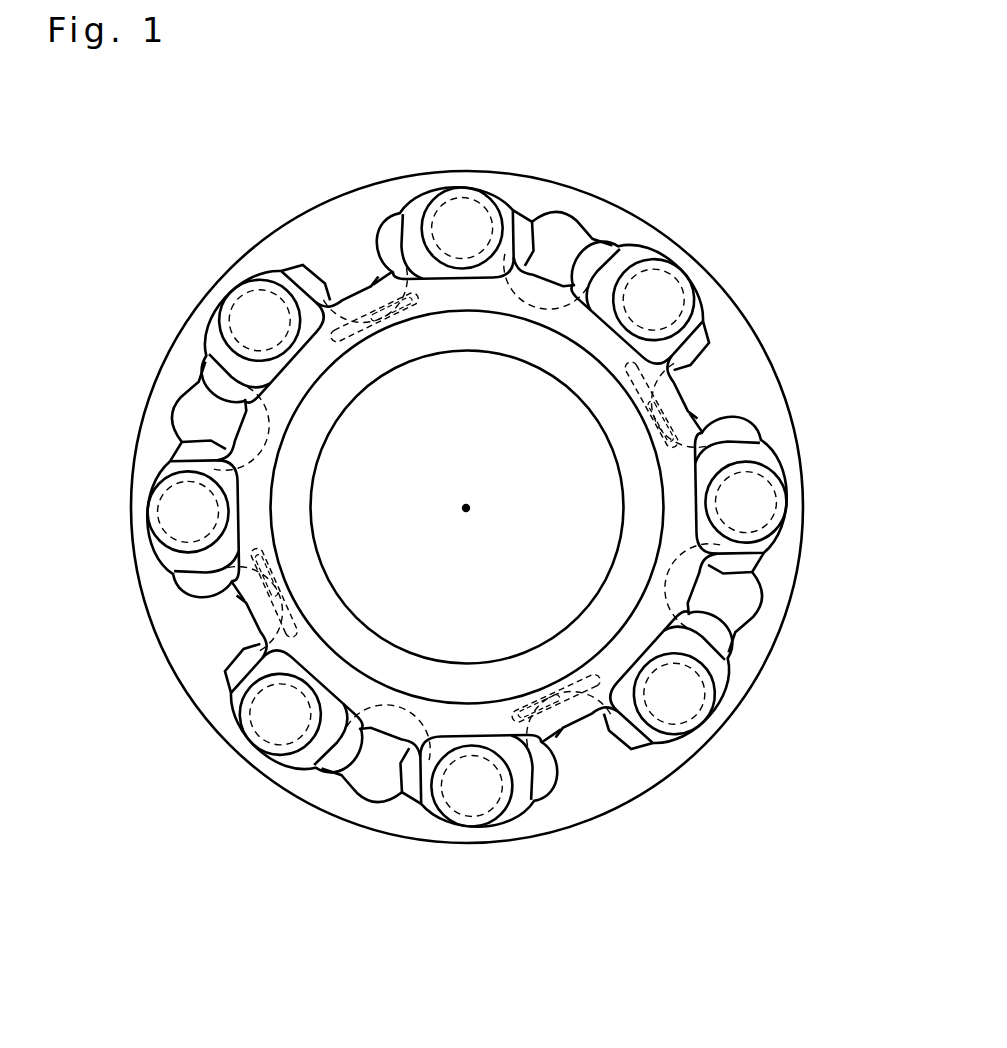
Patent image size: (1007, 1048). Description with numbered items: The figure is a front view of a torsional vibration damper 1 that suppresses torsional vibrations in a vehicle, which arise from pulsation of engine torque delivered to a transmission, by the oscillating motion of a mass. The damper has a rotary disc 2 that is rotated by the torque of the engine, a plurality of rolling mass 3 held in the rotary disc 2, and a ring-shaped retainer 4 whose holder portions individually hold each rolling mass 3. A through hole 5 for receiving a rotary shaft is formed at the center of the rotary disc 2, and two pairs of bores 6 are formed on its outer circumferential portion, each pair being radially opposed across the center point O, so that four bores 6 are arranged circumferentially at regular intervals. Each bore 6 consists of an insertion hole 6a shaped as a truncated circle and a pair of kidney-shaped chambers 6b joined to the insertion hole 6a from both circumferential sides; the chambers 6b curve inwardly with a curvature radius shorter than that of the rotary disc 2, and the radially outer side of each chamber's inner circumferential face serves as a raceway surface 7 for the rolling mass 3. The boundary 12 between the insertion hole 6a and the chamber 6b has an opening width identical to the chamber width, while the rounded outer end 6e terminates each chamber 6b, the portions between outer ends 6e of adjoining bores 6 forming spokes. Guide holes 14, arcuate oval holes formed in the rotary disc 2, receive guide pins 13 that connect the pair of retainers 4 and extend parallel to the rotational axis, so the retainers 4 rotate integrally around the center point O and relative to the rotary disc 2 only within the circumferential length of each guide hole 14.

The torsional vibration damper 1 is at (578, 122).
The rotary disc 2 is at (768, 357).
The rolling mass 3 is at (458, 210).
The retainer 4 is at (661, 516).
The through hole 5 is at (530, 362).
The bore 6 is at (416, 220).
The insertion hole 6a is at (590, 234).
The chamber 6b is at (412, 212).
The outer end 6e is at (738, 372).
The raceway surface 7 is at (513, 205).
The boundary 12 is at (553, 225).
The guide pin 13 is at (372, 332).
The guide hole 14 is at (398, 318).
The center point O is at (470, 509).